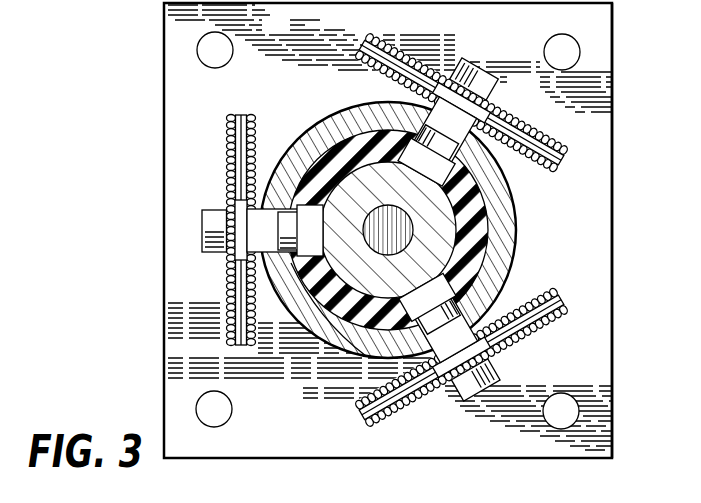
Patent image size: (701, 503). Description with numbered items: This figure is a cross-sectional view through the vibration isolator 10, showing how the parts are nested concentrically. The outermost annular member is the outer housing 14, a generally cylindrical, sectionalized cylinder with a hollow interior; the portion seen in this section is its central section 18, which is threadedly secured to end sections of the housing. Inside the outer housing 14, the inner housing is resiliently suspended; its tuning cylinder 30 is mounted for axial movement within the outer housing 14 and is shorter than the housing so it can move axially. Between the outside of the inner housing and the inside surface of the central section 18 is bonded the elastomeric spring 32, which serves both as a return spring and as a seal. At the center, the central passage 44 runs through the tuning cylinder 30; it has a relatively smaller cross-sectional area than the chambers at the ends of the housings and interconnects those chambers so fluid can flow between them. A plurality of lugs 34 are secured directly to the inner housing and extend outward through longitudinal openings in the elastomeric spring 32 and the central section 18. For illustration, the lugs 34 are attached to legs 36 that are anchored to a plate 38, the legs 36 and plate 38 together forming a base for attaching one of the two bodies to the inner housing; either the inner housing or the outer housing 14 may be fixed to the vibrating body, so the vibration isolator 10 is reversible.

The vibration isolator 10 is at (290, 78).
The outer housing 14 is at (532, 236).
The central section 18 is at (510, 277).
The tuning cylinder 30 is at (308, 331).
The elastomeric spring 32 is at (486, 214).
The lugs 34 is at (231, 223).
The legs 36 is at (417, 57).
The plate 38 is at (612, 117).
The central passage 44 is at (360, 257).